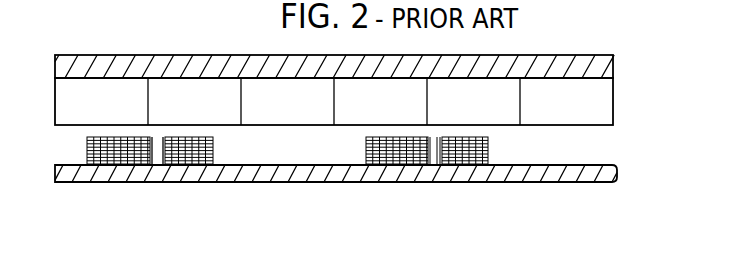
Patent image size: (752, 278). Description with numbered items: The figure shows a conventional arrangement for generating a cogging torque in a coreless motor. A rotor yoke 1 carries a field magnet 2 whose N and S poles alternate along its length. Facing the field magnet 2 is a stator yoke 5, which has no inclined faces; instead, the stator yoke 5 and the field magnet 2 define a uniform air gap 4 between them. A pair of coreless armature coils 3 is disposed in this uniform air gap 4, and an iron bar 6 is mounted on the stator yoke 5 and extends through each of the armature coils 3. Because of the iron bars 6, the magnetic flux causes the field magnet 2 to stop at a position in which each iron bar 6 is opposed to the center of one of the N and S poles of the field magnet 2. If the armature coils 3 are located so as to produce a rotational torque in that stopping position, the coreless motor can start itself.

The rotor yoke 1 is at (597, 70).
The field magnet 2 is at (604, 108).
The coreless armature coil 3 is at (93, 150).
The uniform air gap 4 is at (254, 153).
The stator yoke 5 is at (344, 170).
The iron bar 6 is at (157, 165).